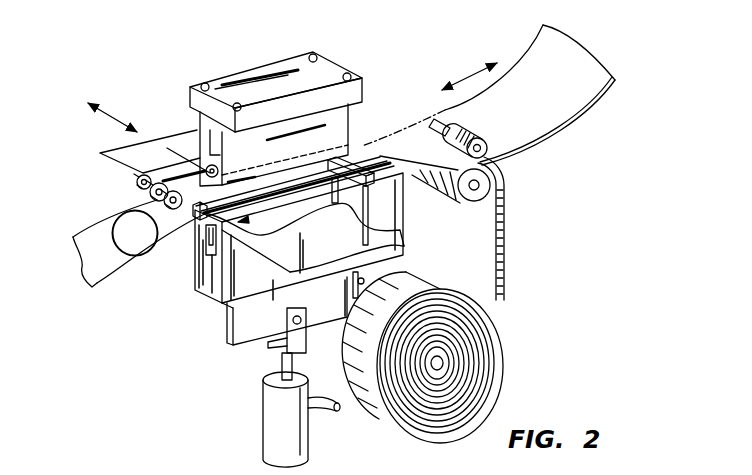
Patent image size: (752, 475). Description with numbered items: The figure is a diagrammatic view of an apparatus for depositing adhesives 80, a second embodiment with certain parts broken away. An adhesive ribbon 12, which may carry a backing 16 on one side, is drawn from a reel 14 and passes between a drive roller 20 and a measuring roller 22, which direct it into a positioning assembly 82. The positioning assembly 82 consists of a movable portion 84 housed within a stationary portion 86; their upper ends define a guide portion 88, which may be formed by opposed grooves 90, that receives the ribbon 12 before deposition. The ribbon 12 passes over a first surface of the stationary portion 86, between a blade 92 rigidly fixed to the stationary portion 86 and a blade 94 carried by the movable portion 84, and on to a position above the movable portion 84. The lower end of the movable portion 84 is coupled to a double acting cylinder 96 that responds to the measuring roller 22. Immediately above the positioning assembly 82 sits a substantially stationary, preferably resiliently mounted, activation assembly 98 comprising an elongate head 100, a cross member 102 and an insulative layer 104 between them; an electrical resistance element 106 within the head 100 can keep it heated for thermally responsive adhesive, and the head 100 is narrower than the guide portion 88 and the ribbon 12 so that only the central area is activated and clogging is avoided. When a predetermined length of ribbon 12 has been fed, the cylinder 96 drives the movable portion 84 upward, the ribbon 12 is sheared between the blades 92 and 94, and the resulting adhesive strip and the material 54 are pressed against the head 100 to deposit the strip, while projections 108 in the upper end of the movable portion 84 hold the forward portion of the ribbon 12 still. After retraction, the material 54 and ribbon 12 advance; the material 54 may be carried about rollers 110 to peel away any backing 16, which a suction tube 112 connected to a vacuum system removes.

The adhesive ribbon 12 is at (517, 297).
The reel 14 is at (478, 386).
The backing 16 is at (193, 206).
The drive roller 20 is at (470, 200).
The measuring roller 22 is at (482, 138).
The material 54 is at (357, 148).
The apparatus for depositing adhesives 80 is at (195, 385).
The positioning assembly 82 is at (176, 280).
The movable portion 84 is at (328, 312).
The stationary portion 86 is at (404, 255).
The guide portion 88 is at (217, 218).
The opposed grooves 90 is at (387, 173).
The blade 92 is at (368, 194).
The blade 94 is at (357, 220).
The double acting cylinder 96 is at (300, 443).
The activation assembly 98 is at (232, 58).
The elongate head 100 is at (348, 150).
The cross member 102 is at (350, 84).
The insulative layer 104 is at (210, 165).
The electrical resistance element 106 is at (137, 183).
The projections 108 is at (243, 222).
The rollers 110 is at (146, 200).
The suction tube 112 is at (100, 234).